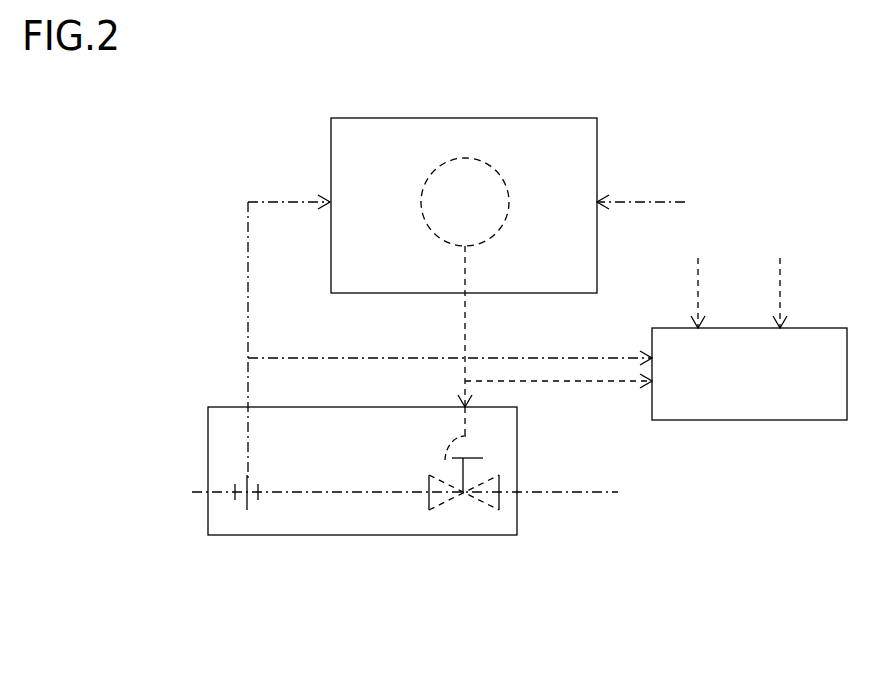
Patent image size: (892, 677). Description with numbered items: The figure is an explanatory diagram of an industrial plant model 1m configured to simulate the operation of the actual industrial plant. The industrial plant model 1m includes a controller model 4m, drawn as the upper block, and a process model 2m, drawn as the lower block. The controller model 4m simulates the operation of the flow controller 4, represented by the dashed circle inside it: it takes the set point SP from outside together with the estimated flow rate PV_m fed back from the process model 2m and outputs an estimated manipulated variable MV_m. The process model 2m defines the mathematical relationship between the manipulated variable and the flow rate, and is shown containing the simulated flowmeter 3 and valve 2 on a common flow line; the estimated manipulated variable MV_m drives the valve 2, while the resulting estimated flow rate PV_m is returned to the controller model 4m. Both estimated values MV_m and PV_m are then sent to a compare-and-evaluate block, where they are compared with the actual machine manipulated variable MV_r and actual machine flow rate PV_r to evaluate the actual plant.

The industrial plant model 1m is at (678, 105).
The controller model 4m is at (415, 118).
The flow controller 4 is at (438, 237).
The process model 2m is at (326, 535).
The flowmeter 3 is at (247, 480).
The valve 2 is at (466, 436).